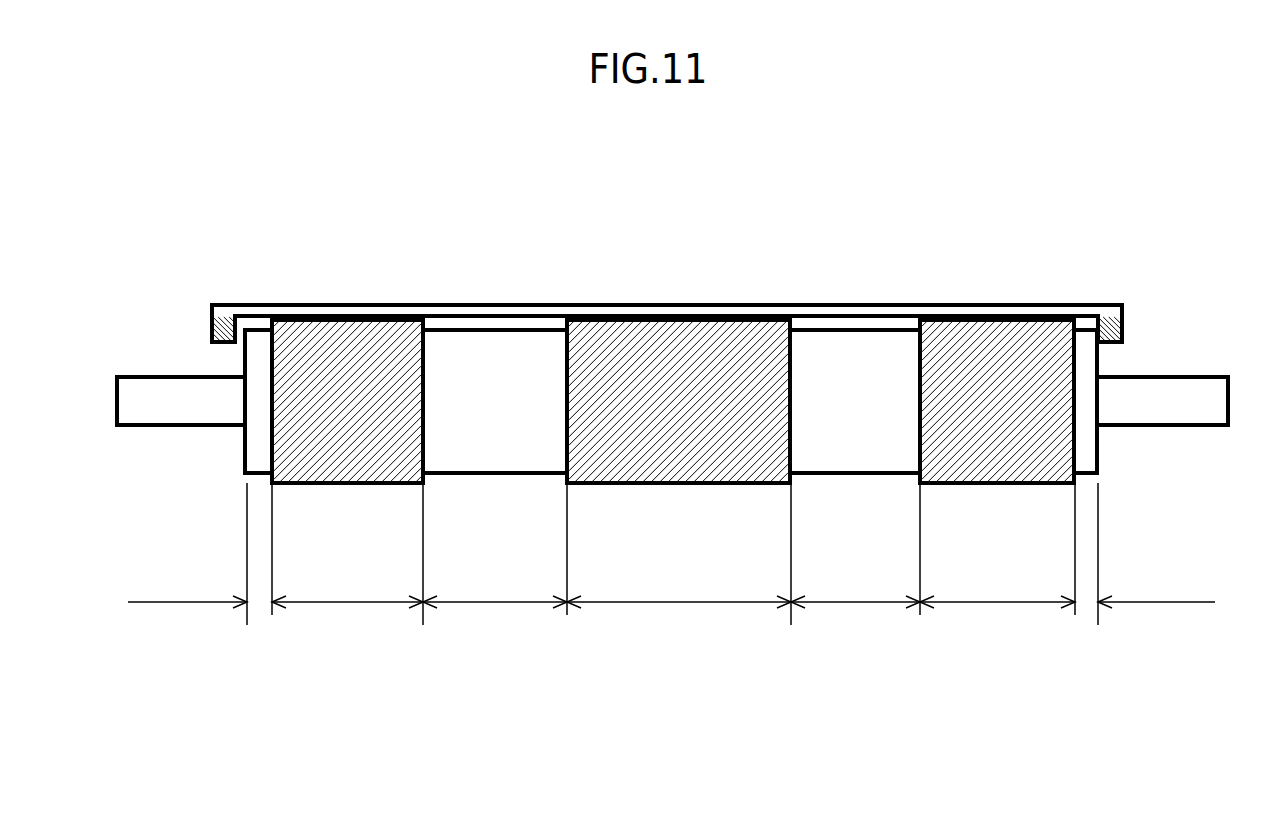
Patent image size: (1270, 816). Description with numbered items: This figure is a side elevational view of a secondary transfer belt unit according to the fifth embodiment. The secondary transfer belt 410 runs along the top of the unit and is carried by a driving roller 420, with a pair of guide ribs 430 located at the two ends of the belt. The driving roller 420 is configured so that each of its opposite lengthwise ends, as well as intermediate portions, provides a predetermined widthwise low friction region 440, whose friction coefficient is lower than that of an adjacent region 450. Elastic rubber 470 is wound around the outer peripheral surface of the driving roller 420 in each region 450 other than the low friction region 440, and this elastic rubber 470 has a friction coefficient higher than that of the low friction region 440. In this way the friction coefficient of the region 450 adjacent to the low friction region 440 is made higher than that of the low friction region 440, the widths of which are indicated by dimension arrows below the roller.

The secondary transfer belt 410 is at (674, 314).
The driving roller 420 is at (1085, 457).
The guide ribs 430 is at (212, 326).
The low friction region 440 is at (182, 605).
The region adjacent to the low friction region 450 is at (343, 605).
The elastic rubber 470 is at (343, 460).